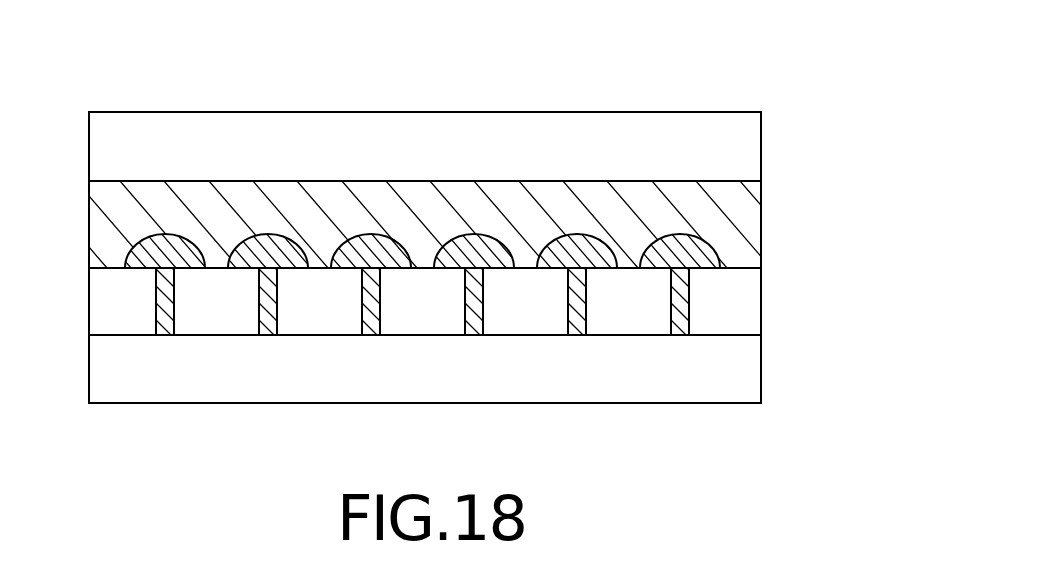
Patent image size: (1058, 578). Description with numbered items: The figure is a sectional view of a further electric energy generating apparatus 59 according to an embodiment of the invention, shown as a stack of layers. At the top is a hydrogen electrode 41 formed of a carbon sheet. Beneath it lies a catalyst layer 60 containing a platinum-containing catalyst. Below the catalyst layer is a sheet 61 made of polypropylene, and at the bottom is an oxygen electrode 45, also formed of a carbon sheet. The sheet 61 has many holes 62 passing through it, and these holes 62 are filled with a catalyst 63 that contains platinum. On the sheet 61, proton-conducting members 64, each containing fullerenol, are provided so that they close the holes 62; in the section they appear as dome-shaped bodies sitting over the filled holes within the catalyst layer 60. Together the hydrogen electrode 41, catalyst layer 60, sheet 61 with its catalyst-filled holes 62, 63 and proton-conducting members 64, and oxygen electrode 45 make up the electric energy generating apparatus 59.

The electric energy generating apparatus 59 is at (464, 209).
The hydrogen electrode 41 is at (761, 142).
The catalyst layer 60 is at (761, 220).
The proton-conducting member 64 is at (130, 236).
The sheet 61 is at (761, 298).
The hole 62 is at (157, 318).
The catalyst 63 is at (268, 336).
The oxygen electrode 45 is at (761, 367).